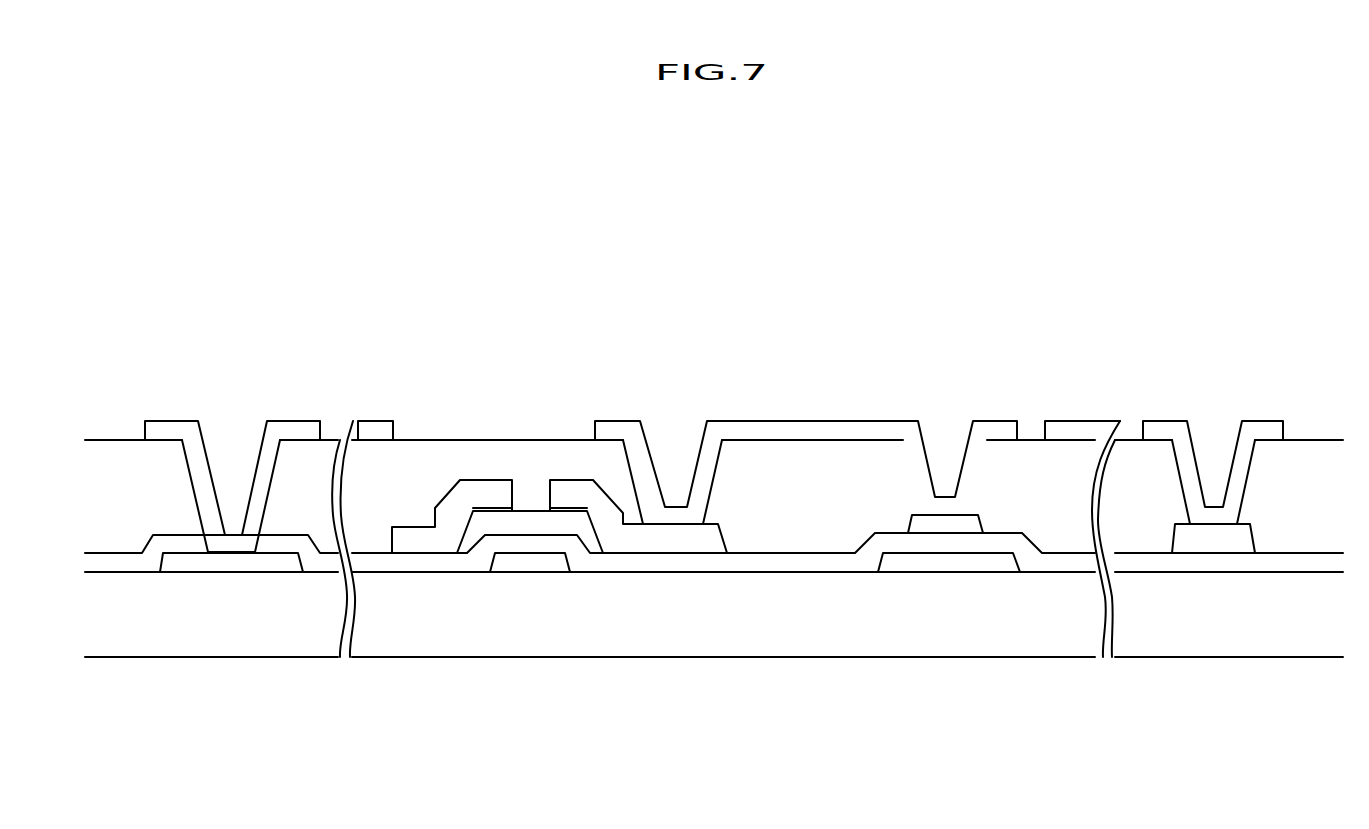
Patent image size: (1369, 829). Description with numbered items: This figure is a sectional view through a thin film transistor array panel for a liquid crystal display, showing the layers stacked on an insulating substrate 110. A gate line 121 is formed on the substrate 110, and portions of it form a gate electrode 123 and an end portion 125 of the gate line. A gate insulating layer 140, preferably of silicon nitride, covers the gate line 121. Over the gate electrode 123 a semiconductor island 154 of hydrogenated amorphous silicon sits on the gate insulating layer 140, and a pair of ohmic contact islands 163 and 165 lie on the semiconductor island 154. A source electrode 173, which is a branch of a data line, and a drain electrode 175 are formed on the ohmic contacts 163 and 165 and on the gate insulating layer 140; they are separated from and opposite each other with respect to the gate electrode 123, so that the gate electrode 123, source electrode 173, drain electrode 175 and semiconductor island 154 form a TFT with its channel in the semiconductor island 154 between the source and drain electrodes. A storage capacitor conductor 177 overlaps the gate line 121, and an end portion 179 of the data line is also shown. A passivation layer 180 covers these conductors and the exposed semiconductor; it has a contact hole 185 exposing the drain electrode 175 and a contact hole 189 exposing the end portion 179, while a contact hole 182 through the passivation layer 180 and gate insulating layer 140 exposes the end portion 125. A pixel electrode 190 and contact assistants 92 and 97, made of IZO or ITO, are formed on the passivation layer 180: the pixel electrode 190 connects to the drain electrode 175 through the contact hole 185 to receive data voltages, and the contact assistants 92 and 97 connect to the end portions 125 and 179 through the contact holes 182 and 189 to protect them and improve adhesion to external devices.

The contact assistant 92 is at (170, 423).
The contact assistant 97 is at (1268, 427).
The insulating substrate 110 is at (130, 638).
The gate line 121 is at (975, 565).
The gate electrode 123 is at (530, 567).
The end portion of gate line 125 is at (230, 565).
The gate insulating layer 140 is at (323, 565).
The semiconductor island 154 is at (482, 527).
The ohmic contact island 163 is at (497, 508).
The ohmic contact island 165 is at (560, 508).
The source electrode 173 is at (425, 545).
The drain electrode 175 is at (630, 545).
The storage capacitor conductor 177 is at (928, 527).
The end portion of data line 179 is at (1217, 545).
The passivation layer 180 is at (122, 455).
The contact hole 182 is at (223, 438).
The contact hole 185 is at (665, 438).
The contact hole 189 is at (1208, 436).
The pixel electrode 190 is at (373, 423).